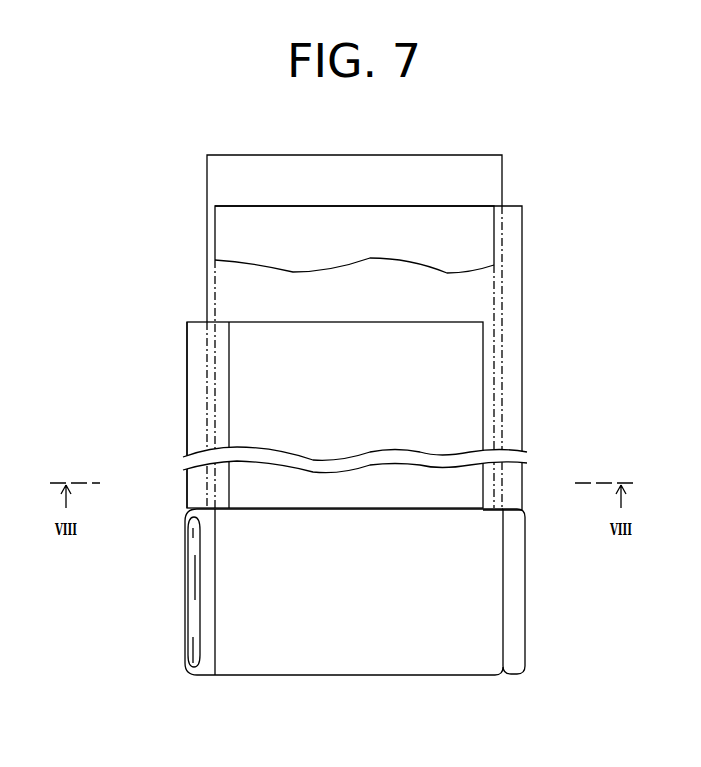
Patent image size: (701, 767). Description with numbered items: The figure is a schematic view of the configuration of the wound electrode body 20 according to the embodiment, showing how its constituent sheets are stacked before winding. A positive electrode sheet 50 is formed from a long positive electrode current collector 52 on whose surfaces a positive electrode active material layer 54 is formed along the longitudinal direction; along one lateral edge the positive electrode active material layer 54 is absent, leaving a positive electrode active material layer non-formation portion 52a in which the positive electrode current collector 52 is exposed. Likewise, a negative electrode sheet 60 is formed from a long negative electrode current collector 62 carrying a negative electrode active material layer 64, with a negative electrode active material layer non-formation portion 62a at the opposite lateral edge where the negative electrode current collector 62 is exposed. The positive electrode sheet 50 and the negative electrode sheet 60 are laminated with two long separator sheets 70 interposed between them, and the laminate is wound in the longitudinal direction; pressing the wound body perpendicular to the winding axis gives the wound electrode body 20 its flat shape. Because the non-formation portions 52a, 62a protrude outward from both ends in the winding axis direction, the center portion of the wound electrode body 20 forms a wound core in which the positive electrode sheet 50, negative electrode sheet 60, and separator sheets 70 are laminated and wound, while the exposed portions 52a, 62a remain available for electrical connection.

The wound electrode body 20 is at (407, 657).
The positive electrode sheet 50 is at (187, 383).
The positive electrode current collector 52 is at (185, 448).
The positive electrode active material layer non-formation portion 52a is at (205, 417).
The positive electrode active material layer 54 is at (243, 339).
The negative electrode sheet 60 is at (522, 274).
The negative electrode current collector 62 is at (524, 366).
The negative electrode active material layer non-formation portion 62a is at (508, 337).
The negative electrode active material layer 64 is at (495, 223).
The separator sheet 70 is at (227, 173).